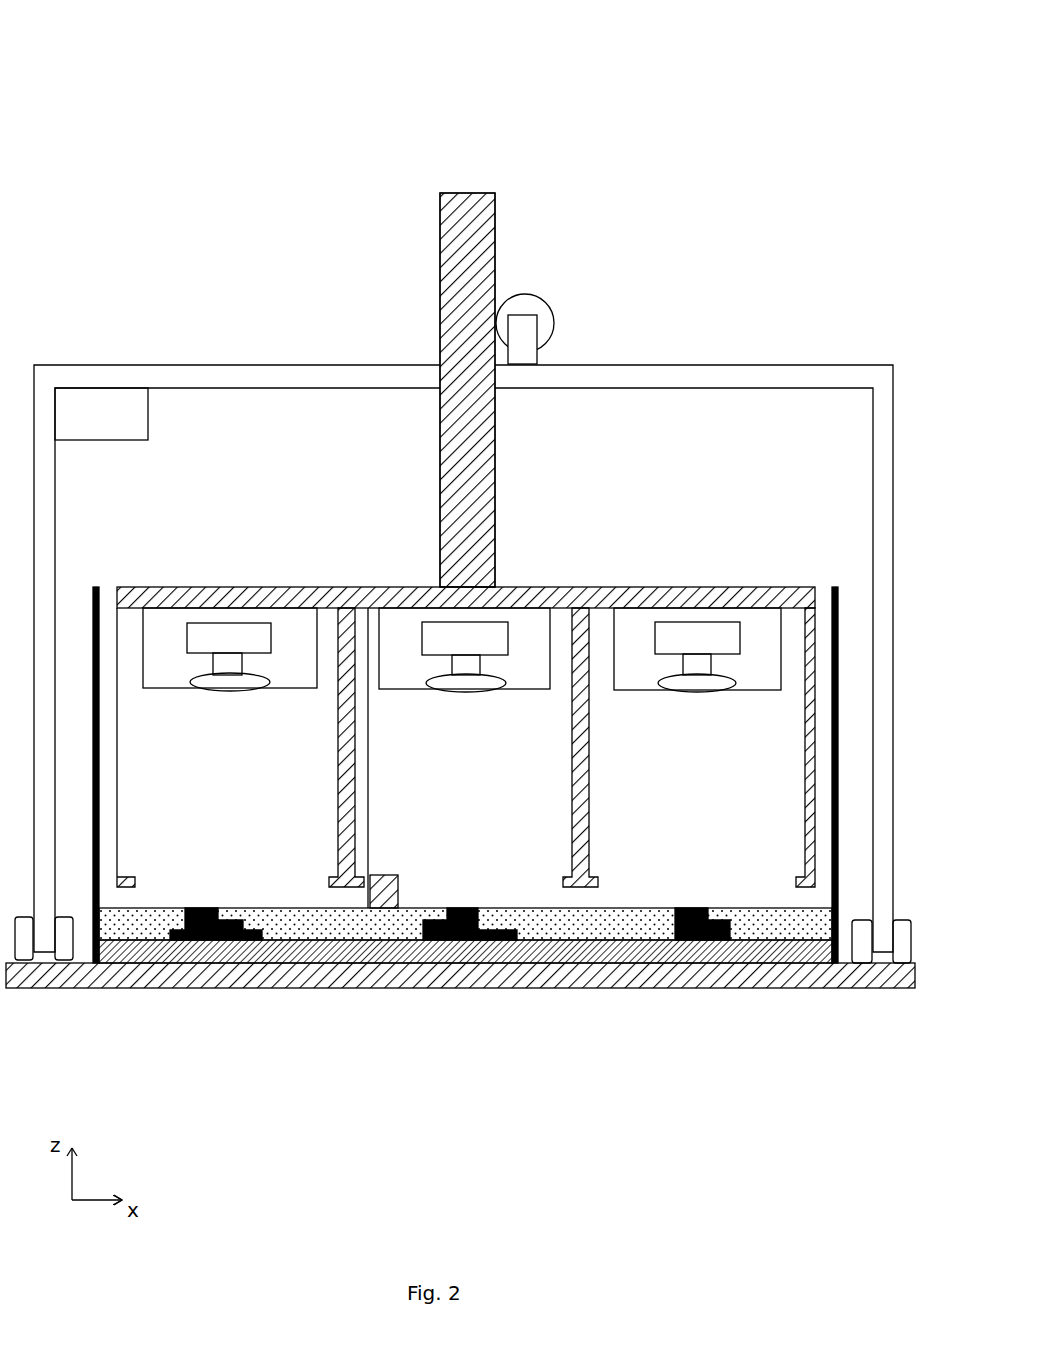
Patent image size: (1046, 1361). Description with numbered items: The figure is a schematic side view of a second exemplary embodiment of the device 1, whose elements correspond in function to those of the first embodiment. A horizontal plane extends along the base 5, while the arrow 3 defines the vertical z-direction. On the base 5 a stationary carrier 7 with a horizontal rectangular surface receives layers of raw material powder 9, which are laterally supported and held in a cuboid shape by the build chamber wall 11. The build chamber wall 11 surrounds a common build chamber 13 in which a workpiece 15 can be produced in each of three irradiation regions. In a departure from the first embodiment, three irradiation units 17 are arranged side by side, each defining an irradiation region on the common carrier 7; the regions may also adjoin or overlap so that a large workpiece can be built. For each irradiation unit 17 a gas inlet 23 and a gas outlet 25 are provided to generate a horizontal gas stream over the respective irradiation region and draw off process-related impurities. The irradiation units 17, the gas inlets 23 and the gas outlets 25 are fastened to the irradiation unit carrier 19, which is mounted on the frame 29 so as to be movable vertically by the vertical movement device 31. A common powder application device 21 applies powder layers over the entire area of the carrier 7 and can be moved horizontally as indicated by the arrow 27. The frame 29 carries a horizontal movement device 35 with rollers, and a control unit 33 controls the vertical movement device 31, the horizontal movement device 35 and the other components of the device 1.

The device 1 is at (159, 67).
The arrow 3 is at (428, 340).
The base 5 is at (168, 988).
The carrier 7 is at (340, 950).
The raw material powder 9 is at (562, 930).
The build chamber wall 11 is at (96, 587).
The build chamber 13 is at (483, 787).
The workpiece 15 is at (205, 908).
The irradiation unit 17 is at (173, 687).
The irradiation unit carrier 19 is at (497, 556).
The powder application device 21 is at (398, 878).
The gas inlet 23 is at (338, 772).
The gas outlet 25 is at (125, 838).
The arrow 27 is at (363, 921).
The frame 29 is at (690, 365).
The vertical movement device 31 is at (531, 266).
The control unit 33 is at (112, 427).
The horizontal movement device 35 is at (65, 962).